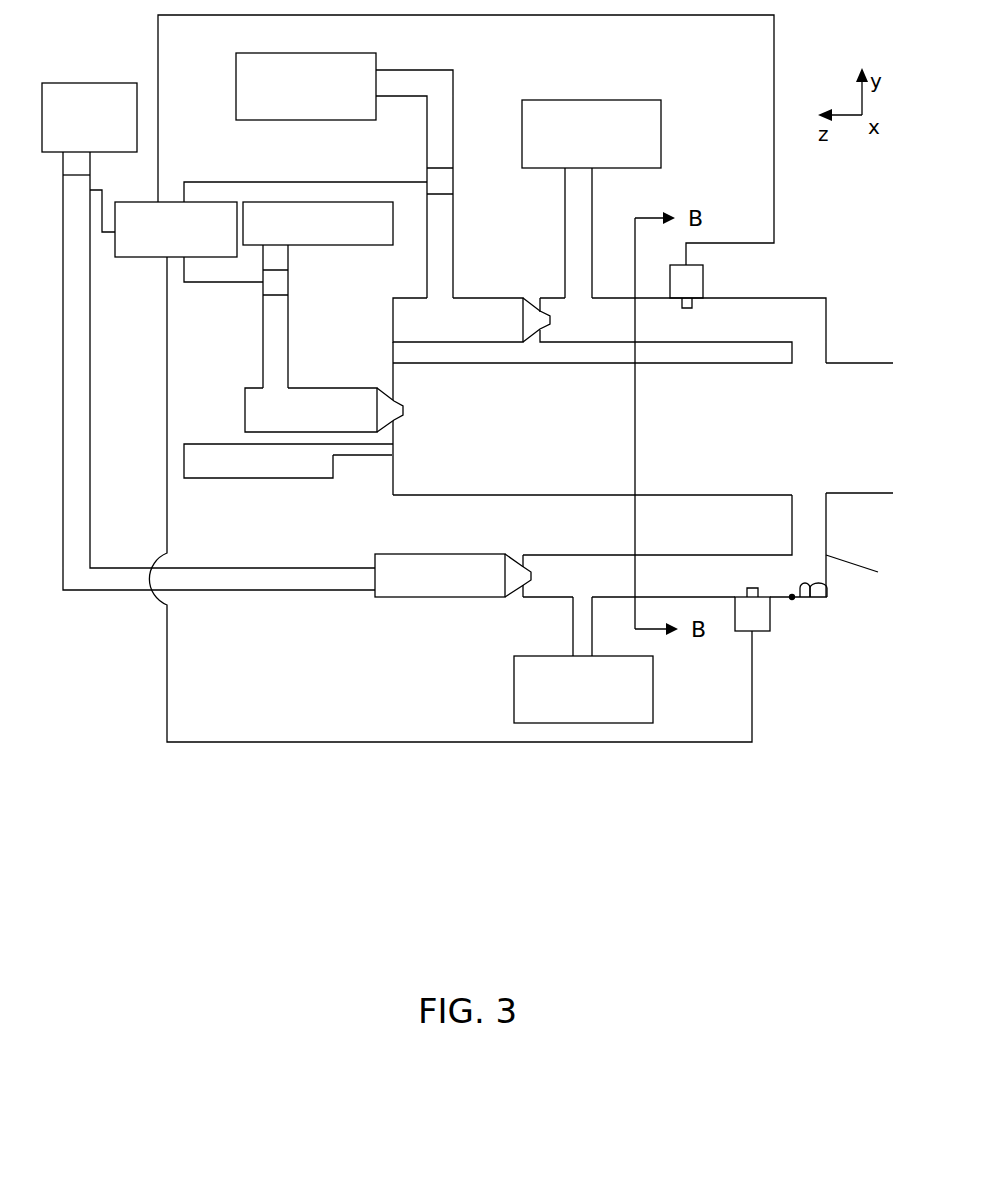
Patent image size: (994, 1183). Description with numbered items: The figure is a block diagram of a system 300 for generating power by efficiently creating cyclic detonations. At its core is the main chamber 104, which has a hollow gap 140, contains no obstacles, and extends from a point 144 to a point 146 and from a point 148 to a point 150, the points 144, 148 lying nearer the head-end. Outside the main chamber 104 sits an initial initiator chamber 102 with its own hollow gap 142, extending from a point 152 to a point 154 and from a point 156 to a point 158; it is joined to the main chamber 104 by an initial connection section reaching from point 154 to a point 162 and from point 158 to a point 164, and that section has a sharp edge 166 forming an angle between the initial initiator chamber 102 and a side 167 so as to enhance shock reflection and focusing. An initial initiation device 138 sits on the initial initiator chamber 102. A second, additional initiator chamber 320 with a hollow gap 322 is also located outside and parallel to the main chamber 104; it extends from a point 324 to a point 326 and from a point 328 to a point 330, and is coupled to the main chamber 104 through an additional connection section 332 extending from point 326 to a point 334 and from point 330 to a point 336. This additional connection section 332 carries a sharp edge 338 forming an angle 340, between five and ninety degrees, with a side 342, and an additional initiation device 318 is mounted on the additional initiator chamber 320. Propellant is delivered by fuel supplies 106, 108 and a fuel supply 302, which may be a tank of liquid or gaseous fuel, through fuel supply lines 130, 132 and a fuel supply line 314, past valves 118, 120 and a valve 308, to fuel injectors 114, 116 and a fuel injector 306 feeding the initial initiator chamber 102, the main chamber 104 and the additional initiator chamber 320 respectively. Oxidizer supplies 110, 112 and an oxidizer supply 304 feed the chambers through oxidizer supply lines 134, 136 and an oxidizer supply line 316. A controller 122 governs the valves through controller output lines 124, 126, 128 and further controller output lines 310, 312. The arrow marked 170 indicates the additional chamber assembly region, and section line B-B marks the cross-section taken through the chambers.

The system for generating power 300 is at (172, 792).
The fuel supply 302 is at (100, 83).
The oxidizer supply 304 is at (653, 672).
The fuel injector 306 is at (435, 597).
The valve 308 is at (77, 186).
The controller output line 310 is at (98, 190).
The controller output line 312 is at (167, 665).
The fuel supply line 314 is at (262, 590).
The oxidizer supply line 316 is at (573, 610).
The additional initiation device 318 is at (735, 610).
The additional initiator chamber 320 is at (790, 600).
The hollow gap 322 is at (612, 578).
The point 324 is at (505, 553).
The point 326 is at (792, 560).
The point 328 is at (523, 597).
The point 330 is at (793, 600).
The additional connection section 332 is at (801, 598).
The point 334 is at (792, 493).
The point 336 is at (826, 493).
The sharp edge 338 is at (818, 598).
The angle 340 is at (815, 598).
The side 342 is at (872, 570).
The initial initiator chamber 102 is at (725, 298).
The main chamber 104 is at (680, 495).
The fuel supply 106 is at (318, 53).
The fuel supply 108 is at (375, 245).
The oxidizer supply 110 is at (598, 100).
The oxidizer supply 112 is at (235, 445).
The fuel injector 114 is at (393, 305).
The fuel injector 116 is at (245, 410).
The valve 118 is at (453, 195).
The valve 120 is at (288, 282).
The controller 122 is at (133, 257).
The controller output line 124 is at (184, 182).
The controller output line 126 is at (200, 283).
The controller output line 128 is at (774, 150).
The fuel supply line 130 is at (400, 70).
The fuel supply line 132 is at (263, 330).
The oxidizer supply line 134 is at (592, 200).
The oxidizer supply line 136 is at (375, 460).
The initial initiation device 138 is at (703, 268).
The hollow gap 140 is at (560, 455).
The hollow gap 142 is at (608, 325).
The point 144 is at (392, 495).
The point 146 is at (893, 493).
The point 148 is at (393, 358).
The point 150 is at (893, 363).
The point 152 is at (540, 298).
The point 154 is at (795, 298).
The point 156 is at (537, 345).
The point 158 is at (792, 342).
The point 162 is at (826, 363).
The point 164 is at (792, 363).
The sharp edge 166 is at (826, 298).
The side 167 is at (826, 318).
The nozzle assembly 170 is at (897, 474).